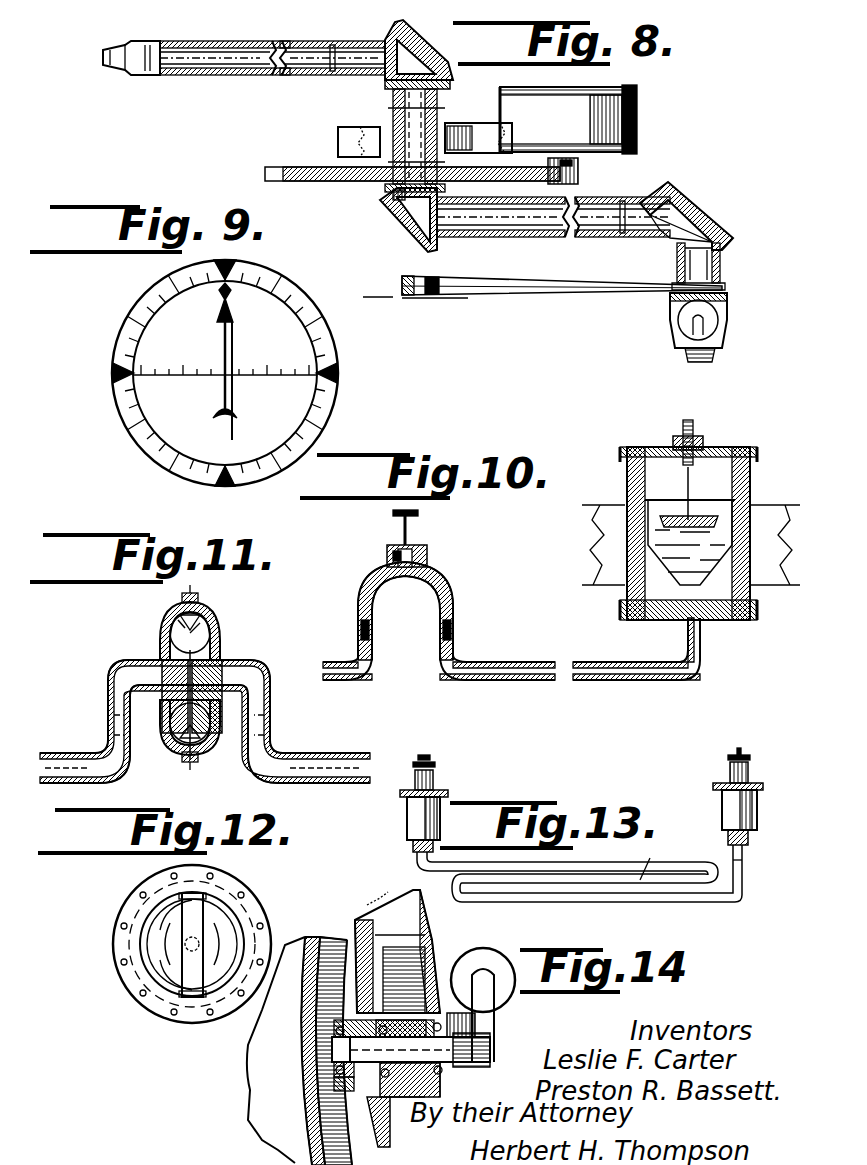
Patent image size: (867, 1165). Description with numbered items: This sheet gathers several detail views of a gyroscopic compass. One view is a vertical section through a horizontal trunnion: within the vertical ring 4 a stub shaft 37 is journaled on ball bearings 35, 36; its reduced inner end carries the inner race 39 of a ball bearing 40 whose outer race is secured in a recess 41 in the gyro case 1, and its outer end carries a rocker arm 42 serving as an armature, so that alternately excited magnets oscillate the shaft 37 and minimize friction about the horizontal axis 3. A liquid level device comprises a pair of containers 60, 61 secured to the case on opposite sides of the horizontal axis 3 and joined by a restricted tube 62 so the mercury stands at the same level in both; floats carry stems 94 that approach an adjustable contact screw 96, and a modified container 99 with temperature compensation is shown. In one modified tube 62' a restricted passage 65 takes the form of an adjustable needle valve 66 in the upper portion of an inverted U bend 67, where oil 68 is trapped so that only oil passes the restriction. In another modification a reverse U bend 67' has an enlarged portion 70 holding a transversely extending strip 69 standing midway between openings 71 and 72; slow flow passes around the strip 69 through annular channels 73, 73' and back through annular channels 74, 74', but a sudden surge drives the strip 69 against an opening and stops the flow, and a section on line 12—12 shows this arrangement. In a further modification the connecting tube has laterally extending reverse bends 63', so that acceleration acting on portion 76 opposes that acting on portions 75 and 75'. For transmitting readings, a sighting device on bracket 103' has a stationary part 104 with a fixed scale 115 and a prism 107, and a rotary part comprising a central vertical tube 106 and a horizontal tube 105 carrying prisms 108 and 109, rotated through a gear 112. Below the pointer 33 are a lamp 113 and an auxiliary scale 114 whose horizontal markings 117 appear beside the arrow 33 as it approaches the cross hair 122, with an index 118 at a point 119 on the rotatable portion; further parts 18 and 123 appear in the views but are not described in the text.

In FIG. 14, the gyro case 1 is at (312, 1000).
In FIG. 14, the horizontal axis 3 is at (411, 1043).
In FIG. 14, the vertical ring 4 is at (395, 897).
In FIG. 11, the section line 12 is at (195, 679).
In FIG. 8, the pointer bar end 18 is at (442, 300).
In FIG. 8, the pointer 33 is at (590, 315).
In FIG. 9, the pointer 33 is at (212, 340).
In FIG. 14, the ball bearing 35 is at (445, 1080).
In FIG. 14, the ball bearing 36 is at (400, 974).
In FIG. 14, the stub shaft 37 is at (468, 1038).
In FIG. 14, the inner race 39 is at (350, 1068).
In FIG. 14, the ball bearing 40 is at (330, 1045).
In FIG. 14, the recess 41 is at (325, 1095).
In FIG. 14, the rocker arm 42 is at (494, 1022).
In FIG. 13, the container 60 is at (757, 810).
In FIG. 13, the container 61 is at (400, 818).
In FIG. 10, the restricted tube 62 is at (660, 649).
In FIG. 10, the tube 62' is at (452, 651).
In FIG. 13, the reverse bends 63' is at (592, 854).
In FIG. 10, the restricted passage 65 is at (425, 552).
In FIG. 10, the adjustable needle valve 66 is at (387, 560).
In FIG. 10, the inverted U bend 67 is at (406, 627).
In FIG. 11, the reverse U bend 67' is at (205, 709).
In FIG. 10, the oil 68 is at (453, 585).
In FIG. 11, the transversely extending strip 69 is at (210, 630).
In FIG. 12, the transversely extending strip 69 is at (205, 915).
In FIG. 11, the enlarged portion 70 is at (160, 635).
In FIG. 12, the enlarged portion 70 is at (248, 918).
In FIG. 11, the opening 71 is at (170, 696).
In FIG. 12, the opening 71 is at (183, 960).
In FIG. 11, the opening 72 is at (209, 705).
In FIG. 11, the annular channel 73 is at (161, 605).
In FIG. 12, the annular channel 73 is at (164, 933).
In FIG. 11, the annular channel 73' is at (179, 734).
In FIG. 11, the annular channel 74 is at (218, 605).
In FIG. 12, the annular channel 74 is at (218, 945).
In FIG. 11, the annular channel 74' is at (218, 751).
In FIG. 13, the pipe portion 75 is at (561, 848).
In FIG. 13, the pipe portion 75' is at (597, 889).
In FIG. 13, the pipe portion 76 is at (656, 852).
In FIG. 10, the stem 94 is at (680, 480).
In FIG. 10, the contact screw 96 is at (696, 432).
In FIG. 10, the reservoir 99 is at (750, 487).
In FIG. 8, the bracket 103' is at (401, 140).
In FIG. 8, the stationary part 104 is at (225, 78).
In FIG. 8, the horizontal tube 105 is at (548, 237).
In FIG. 8, the central vertical tube 106 is at (395, 122).
In FIG. 8, the prism 107 is at (445, 42).
In FIG. 8, the prism 108 is at (410, 215).
In FIG. 8, the second prism 109 is at (730, 200).
In FIG. 8, the gear 112 is at (265, 172).
In FIG. 8, the lamp 113 is at (718, 320).
In FIG. 8, the auxiliary scale 114 is at (670, 320).
In FIG. 8, the scale 115 is at (150, 78).
In FIG. 9, the scale 115 is at (318, 360).
In FIG. 9, the horizontal markings 117 is at (243, 377).
In FIG. 9, the index 118 is at (226, 294).
In FIG. 8, the index location 119 is at (393, 200).
In FIG. 9, the index location 119 is at (232, 262).
In FIG. 9, the cross hair 122 is at (233, 340).
In FIG. 8, the coil housing 123 is at (568, 119).